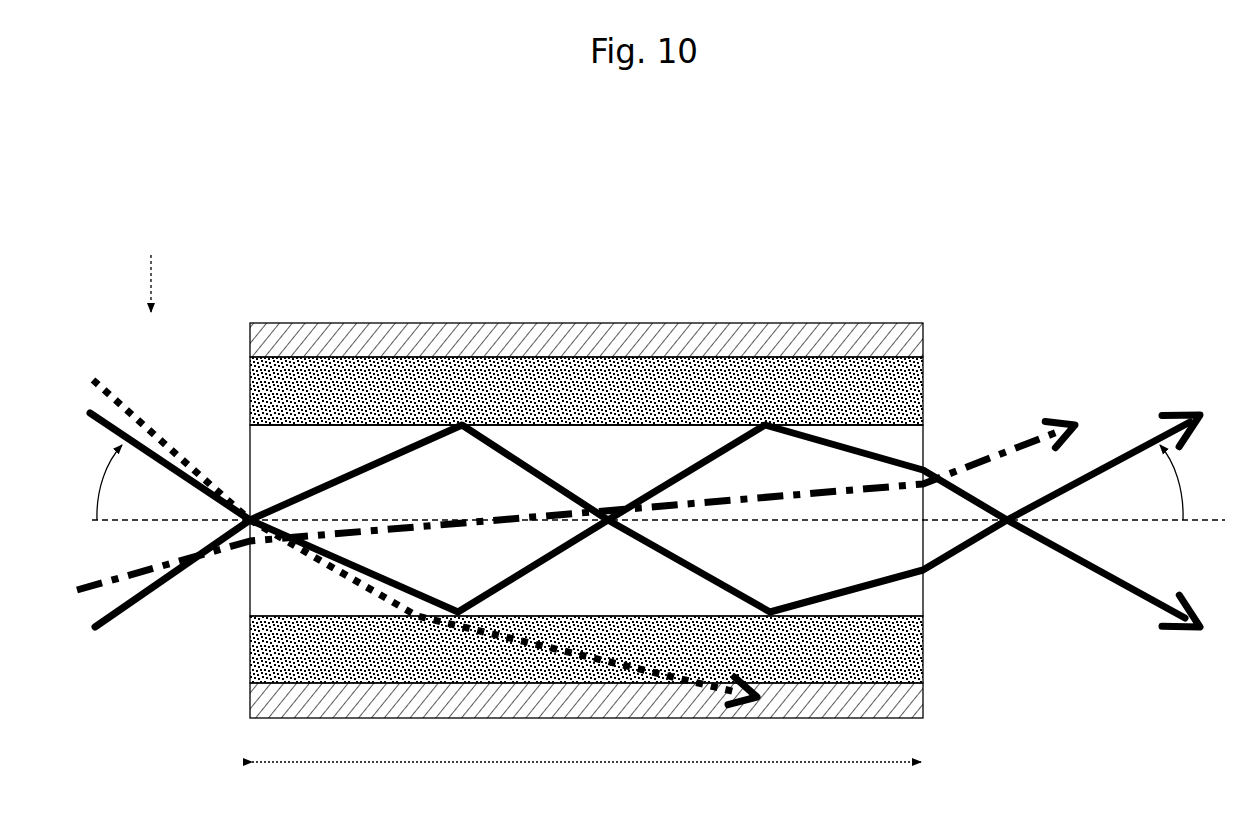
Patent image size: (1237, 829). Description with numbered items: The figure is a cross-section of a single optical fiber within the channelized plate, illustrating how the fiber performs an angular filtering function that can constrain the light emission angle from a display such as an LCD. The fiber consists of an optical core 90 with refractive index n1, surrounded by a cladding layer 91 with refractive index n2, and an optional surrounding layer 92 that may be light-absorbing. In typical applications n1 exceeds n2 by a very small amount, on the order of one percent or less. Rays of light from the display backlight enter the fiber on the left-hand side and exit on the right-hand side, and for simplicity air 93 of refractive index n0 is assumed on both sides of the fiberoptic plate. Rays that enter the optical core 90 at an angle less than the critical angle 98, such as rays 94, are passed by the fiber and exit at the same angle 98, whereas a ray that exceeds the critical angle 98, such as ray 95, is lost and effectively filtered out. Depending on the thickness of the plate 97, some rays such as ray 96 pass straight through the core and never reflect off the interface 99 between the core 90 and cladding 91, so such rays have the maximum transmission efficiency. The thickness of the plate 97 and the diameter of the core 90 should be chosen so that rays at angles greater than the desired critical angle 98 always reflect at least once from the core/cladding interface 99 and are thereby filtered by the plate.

The optical core 90 is at (305, 455).
The cladding layer 91 is at (295, 390).
The surrounding layer 92 is at (295, 343).
The air 93 is at (152, 271).
The rays 94 is at (627, 527).
The ray 95 is at (406, 535).
The ray 96 is at (557, 516).
The thickness of the plate 97 is at (586, 783).
The critical angle 98 is at (658, 482).
The interface 99 is at (676, 420).